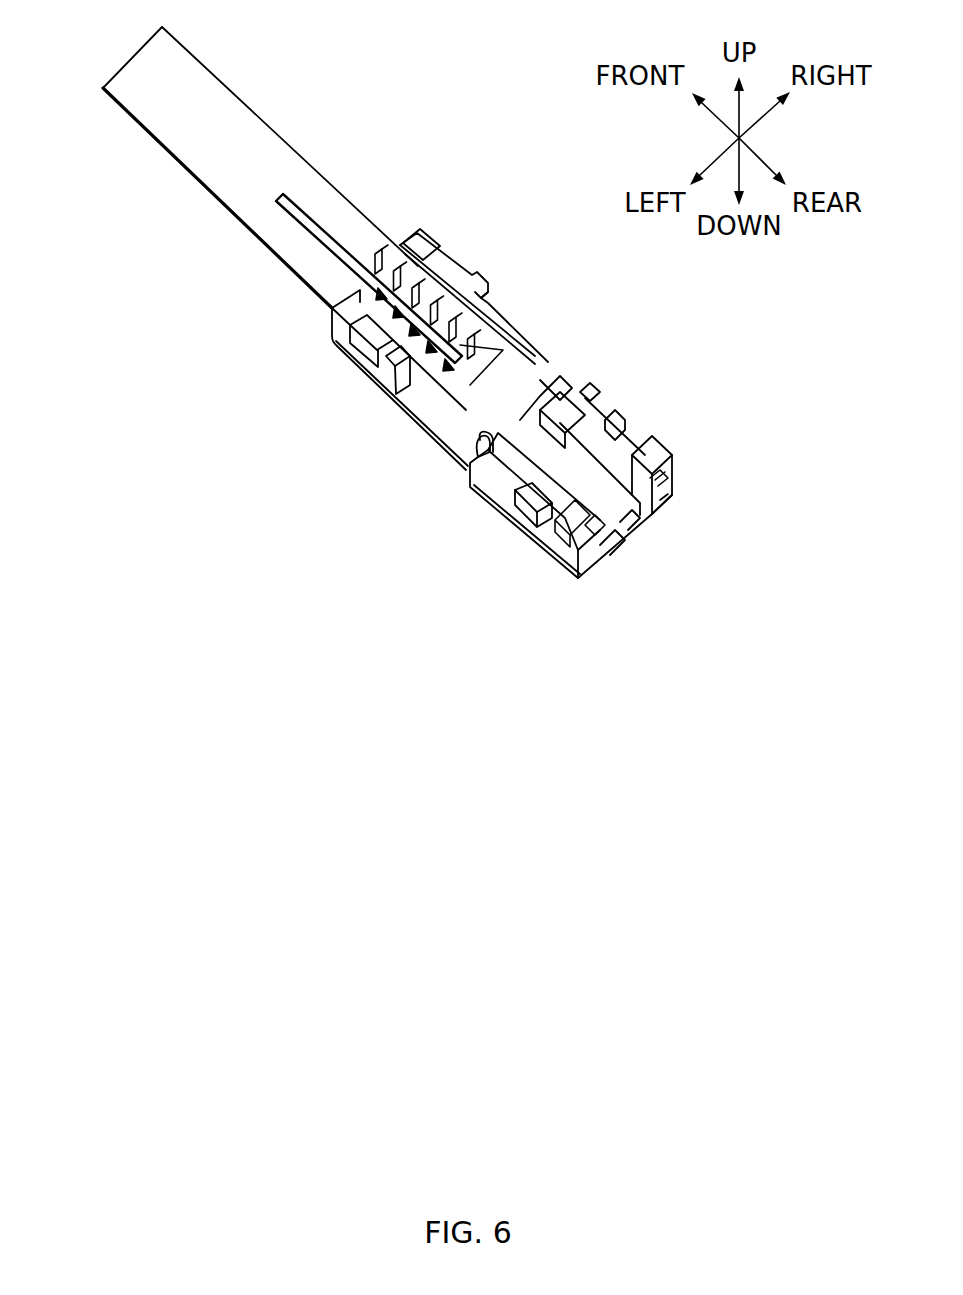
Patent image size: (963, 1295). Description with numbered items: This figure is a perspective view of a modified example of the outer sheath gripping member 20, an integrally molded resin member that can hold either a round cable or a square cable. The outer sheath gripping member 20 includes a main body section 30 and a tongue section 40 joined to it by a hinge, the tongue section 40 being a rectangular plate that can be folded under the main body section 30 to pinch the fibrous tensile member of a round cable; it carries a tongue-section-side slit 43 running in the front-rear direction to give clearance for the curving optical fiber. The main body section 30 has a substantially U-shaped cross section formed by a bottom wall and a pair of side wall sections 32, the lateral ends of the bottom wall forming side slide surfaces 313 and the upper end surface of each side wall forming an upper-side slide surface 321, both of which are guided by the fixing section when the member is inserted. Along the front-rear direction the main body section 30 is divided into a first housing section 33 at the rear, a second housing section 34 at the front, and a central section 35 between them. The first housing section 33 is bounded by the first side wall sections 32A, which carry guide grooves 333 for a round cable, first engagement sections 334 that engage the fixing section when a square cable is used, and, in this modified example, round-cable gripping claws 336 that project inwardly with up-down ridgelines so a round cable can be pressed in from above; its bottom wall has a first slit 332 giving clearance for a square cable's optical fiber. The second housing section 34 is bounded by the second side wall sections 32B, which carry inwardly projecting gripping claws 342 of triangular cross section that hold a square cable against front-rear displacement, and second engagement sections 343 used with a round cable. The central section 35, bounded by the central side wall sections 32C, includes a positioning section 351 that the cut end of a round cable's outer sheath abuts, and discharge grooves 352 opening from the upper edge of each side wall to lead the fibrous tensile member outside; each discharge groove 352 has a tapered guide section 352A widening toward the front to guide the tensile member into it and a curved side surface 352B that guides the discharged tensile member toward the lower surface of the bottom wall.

The outer sheath gripping member 20 is at (466, 97).
The main body section 30 is at (257, 395).
The tongue section 40 is at (24, 167).
The tongue-section-side slit 43 is at (304, 223).
The side slide surfaces 313 is at (513, 528).
The side wall sections 32 is at (544, 397).
The first side wall sections 32A is at (652, 472).
The second side wall sections 32B is at (360, 304).
The central side wall sections 32C is at (470, 388).
The upper-side slide surface 321 is at (656, 483).
The first housing section 33 is at (656, 334).
The first slit 332 is at (622, 560).
The guide grooves 333 is at (630, 530).
The first engagement sections 334 is at (597, 389).
The round-cable gripping claws 336 is at (607, 441).
The second housing section 34 is at (481, 161).
The gripping claws 342 is at (410, 257).
The second engagement sections 343 is at (485, 300).
The central section 35 is at (566, 244).
The positioning section 351 is at (552, 405).
The discharge grooves 352 is at (478, 432).
The tapered guide section 352A is at (543, 381).
The curved side surface 352B is at (475, 450).